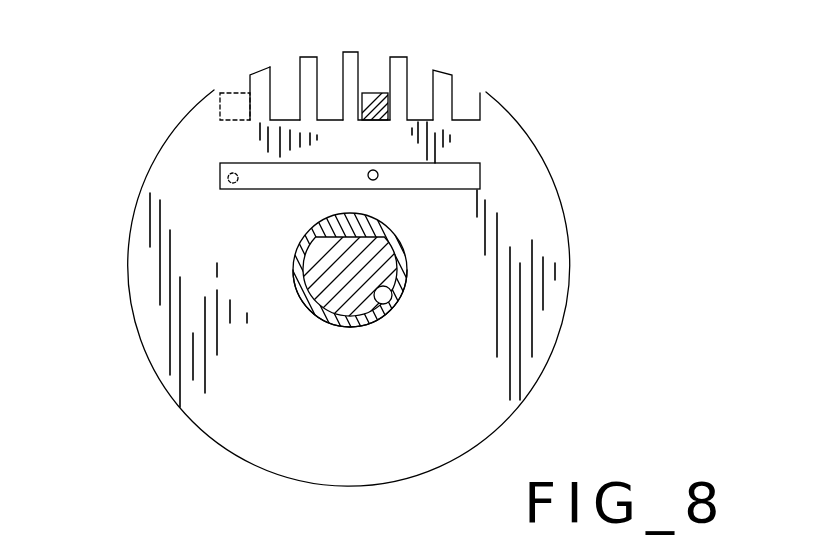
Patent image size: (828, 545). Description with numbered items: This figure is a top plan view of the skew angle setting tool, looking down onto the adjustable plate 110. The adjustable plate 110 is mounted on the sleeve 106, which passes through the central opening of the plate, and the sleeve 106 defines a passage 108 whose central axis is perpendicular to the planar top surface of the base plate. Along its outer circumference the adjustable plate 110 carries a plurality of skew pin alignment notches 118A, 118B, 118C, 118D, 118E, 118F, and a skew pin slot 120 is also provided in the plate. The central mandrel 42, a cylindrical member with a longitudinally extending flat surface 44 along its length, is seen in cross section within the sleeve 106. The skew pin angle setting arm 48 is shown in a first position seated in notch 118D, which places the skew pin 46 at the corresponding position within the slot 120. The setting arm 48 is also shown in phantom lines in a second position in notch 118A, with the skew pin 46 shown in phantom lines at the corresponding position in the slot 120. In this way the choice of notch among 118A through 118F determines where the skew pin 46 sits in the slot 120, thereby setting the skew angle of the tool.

The central mandrel 42 is at (317, 273).
The flat surface 44 is at (330, 220).
The skew pin 46 is at (220, 171).
The skew pin angle setting arm 48 is at (247, 92).
The sleeve 106 is at (360, 327).
The passage 108 is at (392, 300).
The adjustable plate 110 is at (555, 350).
The skew pin alignment notch 118A is at (248, 83).
The skew pin alignment notch 118B is at (272, 70).
The skew pin alignment notch 118C is at (317, 63).
The skew pin alignment notch 118D is at (383, 90).
The skew pin alignment notch 118E is at (430, 80).
The skew pin alignment notch 118F is at (482, 70).
The skew pin slot 120 is at (462, 188).